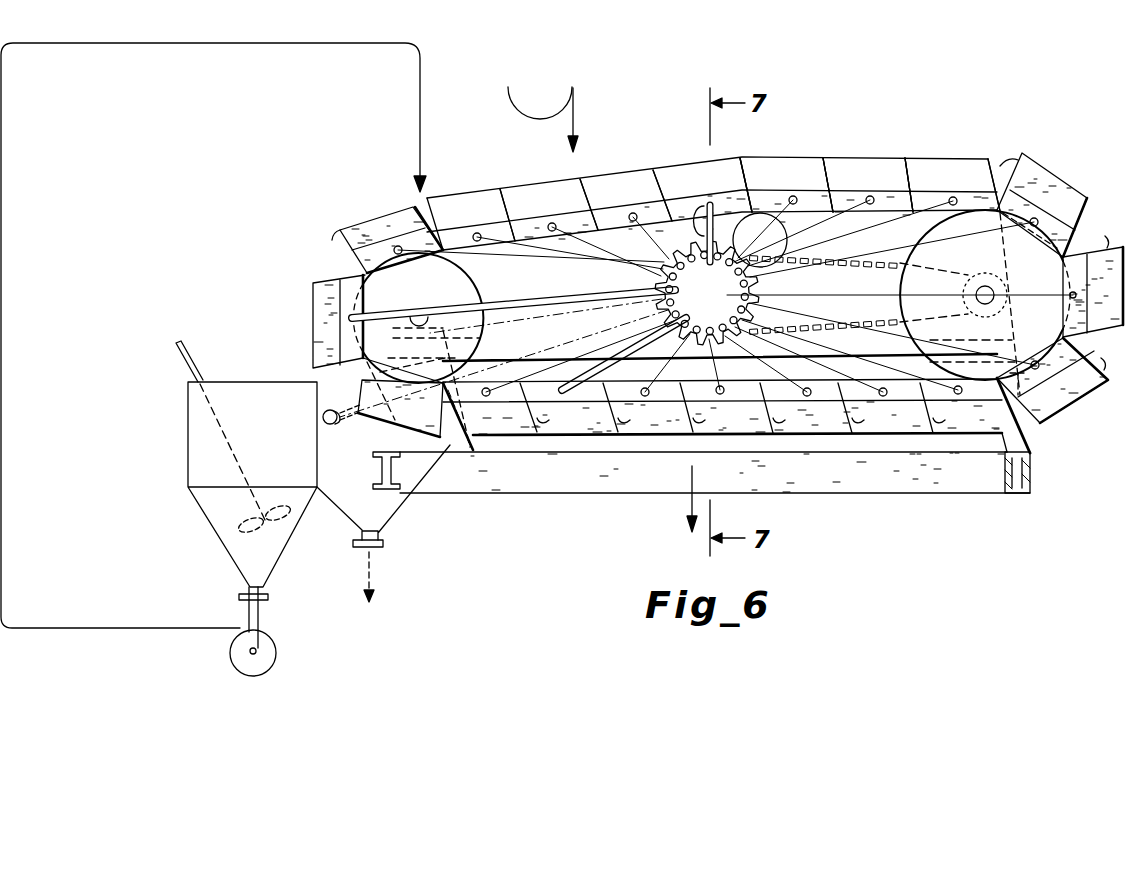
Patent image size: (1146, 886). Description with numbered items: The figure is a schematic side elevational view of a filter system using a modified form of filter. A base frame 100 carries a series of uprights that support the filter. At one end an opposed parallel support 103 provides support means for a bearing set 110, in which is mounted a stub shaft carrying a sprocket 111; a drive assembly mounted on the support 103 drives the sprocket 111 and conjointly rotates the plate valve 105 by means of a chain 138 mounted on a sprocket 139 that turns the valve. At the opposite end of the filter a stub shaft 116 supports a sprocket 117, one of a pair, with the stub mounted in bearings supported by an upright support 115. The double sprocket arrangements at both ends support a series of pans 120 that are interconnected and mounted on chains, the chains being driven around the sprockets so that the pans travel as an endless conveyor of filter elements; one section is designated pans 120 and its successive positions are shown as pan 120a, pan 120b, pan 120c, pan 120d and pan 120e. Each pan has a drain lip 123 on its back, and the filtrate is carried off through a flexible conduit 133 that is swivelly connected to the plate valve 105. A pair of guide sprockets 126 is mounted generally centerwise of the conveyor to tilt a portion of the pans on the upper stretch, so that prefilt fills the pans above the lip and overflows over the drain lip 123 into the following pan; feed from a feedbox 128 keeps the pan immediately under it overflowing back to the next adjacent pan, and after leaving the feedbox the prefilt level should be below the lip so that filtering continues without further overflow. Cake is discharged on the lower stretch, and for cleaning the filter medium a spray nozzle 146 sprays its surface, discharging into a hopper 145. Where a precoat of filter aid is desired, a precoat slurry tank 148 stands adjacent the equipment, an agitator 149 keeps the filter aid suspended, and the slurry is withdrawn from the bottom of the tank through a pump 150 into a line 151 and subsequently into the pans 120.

The base frame 100 is at (885, 490).
The support 103 is at (1028, 433).
The plate valve 105 is at (760, 308).
The bearing set 110 is at (990, 291).
The sprocket 111 is at (1040, 263).
The upright support 115 is at (440, 450).
The stub shaft 116 is at (425, 319).
The sprocket 117 is at (362, 272).
The pans 120 is at (618, 186).
The pan 120a is at (712, 176).
The pan 120b is at (786, 163).
The pan 120c is at (855, 163).
The pan 120d is at (936, 168).
The pan 120e is at (1046, 186).
The drain lip 123 is at (570, 184).
The guide sprockets 126 is at (780, 232).
The feedbox 128 is at (578, 114).
The flexible conduit 133 is at (706, 205).
The chain 138 is at (886, 272).
The sprocket 139 is at (668, 256).
The hopper 145 is at (383, 510).
The spray nozzle 146 is at (333, 426).
The precoat slurry tank 148 is at (188, 418).
The agitator 149 is at (196, 360).
The pump 150 is at (270, 662).
The line 151 is at (118, 627).